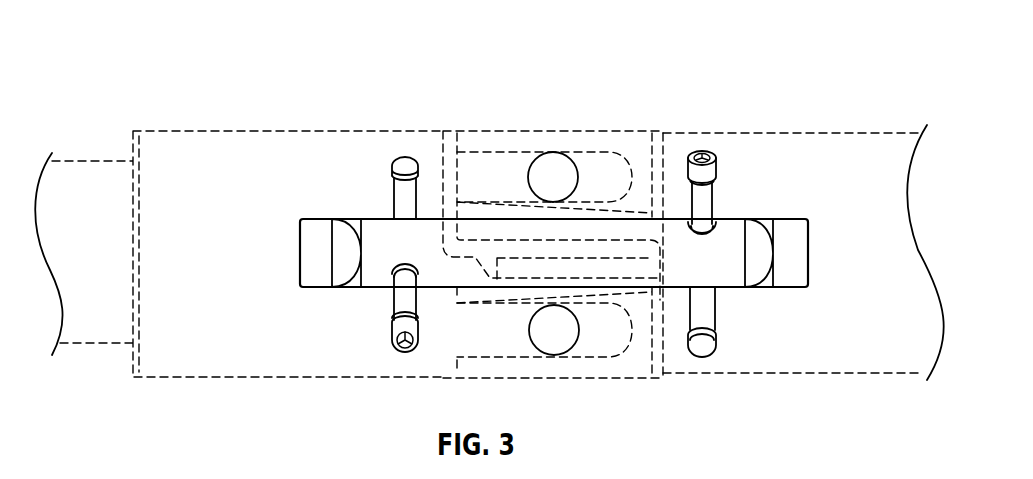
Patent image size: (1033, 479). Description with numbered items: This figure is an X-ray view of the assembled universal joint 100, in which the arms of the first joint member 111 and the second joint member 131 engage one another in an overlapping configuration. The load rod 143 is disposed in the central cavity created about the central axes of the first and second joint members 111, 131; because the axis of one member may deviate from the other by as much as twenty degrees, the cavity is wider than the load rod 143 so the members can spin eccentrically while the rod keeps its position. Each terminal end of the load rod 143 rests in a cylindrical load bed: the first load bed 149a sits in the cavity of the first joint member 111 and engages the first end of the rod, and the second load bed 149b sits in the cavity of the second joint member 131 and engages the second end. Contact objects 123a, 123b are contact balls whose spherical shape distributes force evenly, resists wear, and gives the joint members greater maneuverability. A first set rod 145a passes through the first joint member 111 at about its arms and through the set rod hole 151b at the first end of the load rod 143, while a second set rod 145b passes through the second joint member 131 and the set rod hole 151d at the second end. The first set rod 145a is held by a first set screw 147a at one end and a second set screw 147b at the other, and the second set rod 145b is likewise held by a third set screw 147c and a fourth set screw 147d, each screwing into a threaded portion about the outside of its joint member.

The universal joint 100 is at (138, 52).
The first joint member 111 is at (192, 150).
The second joint member 131 is at (835, 152).
The contact object 123a is at (553, 163).
The contact object 123b is at (550, 345).
The load rod 143 is at (678, 227).
The first load bed 149a is at (312, 230).
The second load bed 149b is at (793, 235).
The first set screw 147a is at (405, 163).
The second set screw 147b is at (392, 328).
The third set screw 147c is at (697, 152).
The fourth set screw 147d is at (700, 350).
The first set rod 145a is at (397, 192).
The second set rod 145b is at (708, 197).
The set rod hole 151b is at (403, 258).
The set rod hole 151d is at (702, 232).